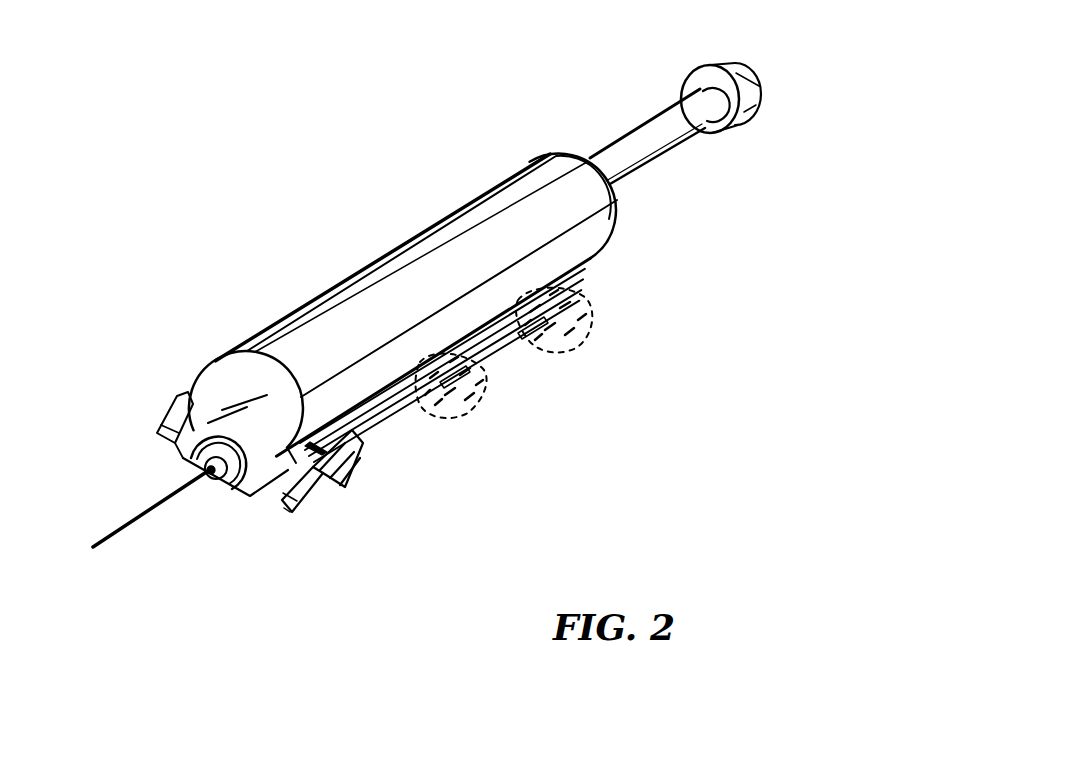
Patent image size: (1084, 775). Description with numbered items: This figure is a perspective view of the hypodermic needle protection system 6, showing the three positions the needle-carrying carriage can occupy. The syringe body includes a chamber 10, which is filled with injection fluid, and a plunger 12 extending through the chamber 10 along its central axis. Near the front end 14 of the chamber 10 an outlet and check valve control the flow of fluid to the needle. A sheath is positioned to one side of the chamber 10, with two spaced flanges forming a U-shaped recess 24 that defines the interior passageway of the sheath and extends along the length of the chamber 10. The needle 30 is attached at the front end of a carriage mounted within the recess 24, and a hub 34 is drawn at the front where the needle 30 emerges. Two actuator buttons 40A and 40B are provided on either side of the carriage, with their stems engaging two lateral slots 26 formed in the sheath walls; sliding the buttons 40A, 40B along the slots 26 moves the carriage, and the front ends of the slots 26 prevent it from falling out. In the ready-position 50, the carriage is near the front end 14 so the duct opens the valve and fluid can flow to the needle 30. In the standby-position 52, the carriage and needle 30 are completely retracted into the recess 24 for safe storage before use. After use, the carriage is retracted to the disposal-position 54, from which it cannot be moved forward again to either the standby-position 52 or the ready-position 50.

The hypodermic needle protection system 6 is at (473, 176).
The chamber 10 is at (390, 292).
The plunger 12 is at (662, 125).
The front end 14 is at (232, 382).
The recess 24 is at (262, 498).
The lateral slots 26 is at (500, 333).
The needle 30 is at (150, 518).
The wire hub 34 is at (200, 469).
The actuator button 40A is at (302, 505).
The actuator button 40B is at (172, 408).
The ready-position 50 is at (353, 504).
The standby-position 52 is at (488, 431).
The disposal-position 54 is at (600, 363).